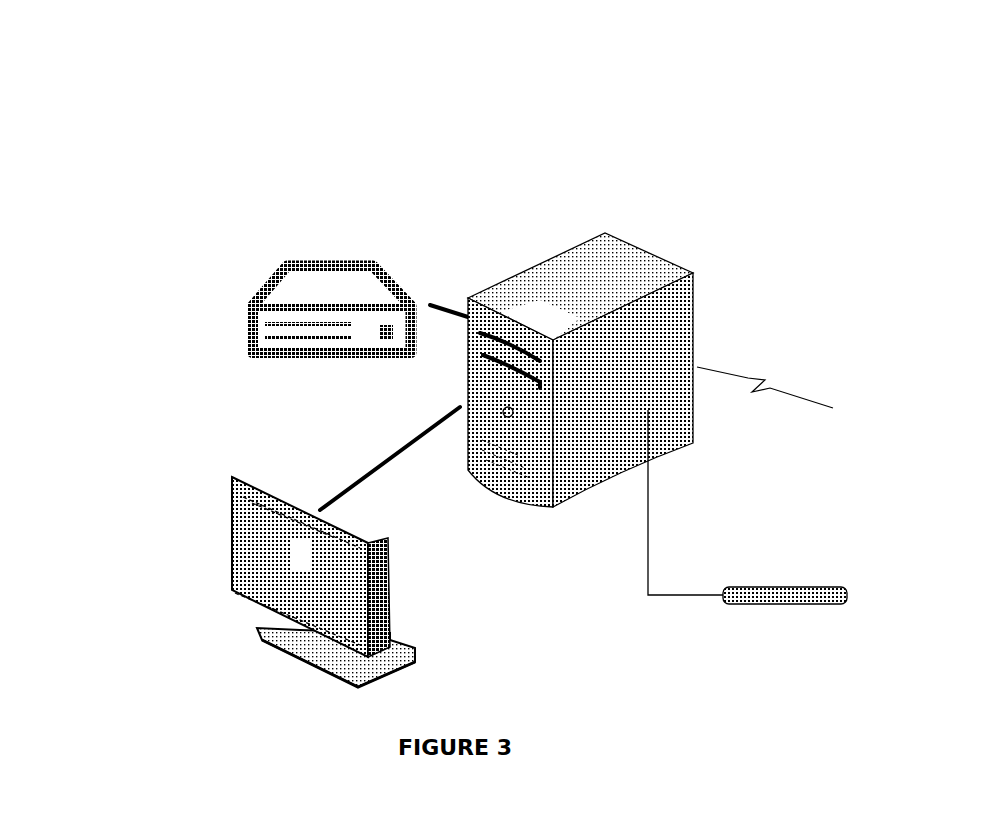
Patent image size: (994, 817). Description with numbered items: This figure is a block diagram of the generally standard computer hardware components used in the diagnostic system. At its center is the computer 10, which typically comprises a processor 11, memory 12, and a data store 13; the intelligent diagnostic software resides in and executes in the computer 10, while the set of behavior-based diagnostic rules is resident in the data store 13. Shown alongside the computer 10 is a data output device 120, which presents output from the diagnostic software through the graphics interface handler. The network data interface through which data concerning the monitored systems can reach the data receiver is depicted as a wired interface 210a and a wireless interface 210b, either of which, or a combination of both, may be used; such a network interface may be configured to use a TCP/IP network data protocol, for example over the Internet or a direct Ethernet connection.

The computer 10 is at (526, 196).
The processor 11 is at (615, 287).
The memory 12 is at (622, 365).
The data store 13 is at (312, 265).
The data output device 120 is at (229, 541).
The wired interface 210a is at (768, 588).
The wireless interface 210b is at (802, 401).